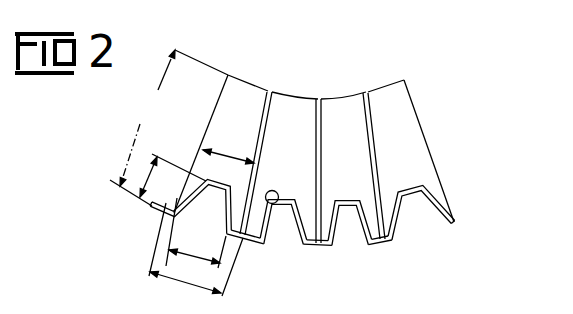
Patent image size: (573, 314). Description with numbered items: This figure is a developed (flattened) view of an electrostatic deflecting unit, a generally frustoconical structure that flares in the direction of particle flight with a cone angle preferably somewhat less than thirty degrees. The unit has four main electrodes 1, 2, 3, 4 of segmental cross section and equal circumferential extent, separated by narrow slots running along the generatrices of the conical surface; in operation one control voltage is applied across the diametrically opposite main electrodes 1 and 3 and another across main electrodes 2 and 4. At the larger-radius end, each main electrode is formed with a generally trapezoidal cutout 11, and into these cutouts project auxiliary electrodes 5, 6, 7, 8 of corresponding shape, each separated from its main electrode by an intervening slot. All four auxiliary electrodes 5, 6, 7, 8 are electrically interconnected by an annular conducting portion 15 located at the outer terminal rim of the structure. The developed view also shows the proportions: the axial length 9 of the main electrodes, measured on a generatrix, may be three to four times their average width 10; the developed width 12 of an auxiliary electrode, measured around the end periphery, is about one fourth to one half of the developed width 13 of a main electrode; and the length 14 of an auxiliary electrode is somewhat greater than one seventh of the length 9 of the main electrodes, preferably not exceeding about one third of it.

The main electrode 1 is at (248, 93).
The main electrode 2 is at (298, 106).
The main electrode 3 is at (339, 108).
The main electrode 4 is at (389, 97).
The auxiliary electrode 5 is at (213, 181).
The auxiliary electrode 6 is at (288, 208).
The auxiliary electrode 7 is at (350, 208).
The auxiliary electrode 8 is at (416, 198).
The axial length 9 is at (142, 128).
The average width 10 is at (228, 146).
The cutout 11 is at (273, 204).
The developed width 12 is at (196, 233).
The developed width 13 is at (196, 249).
The length 14 is at (161, 175).
The annular conducting portion 15 is at (456, 224).